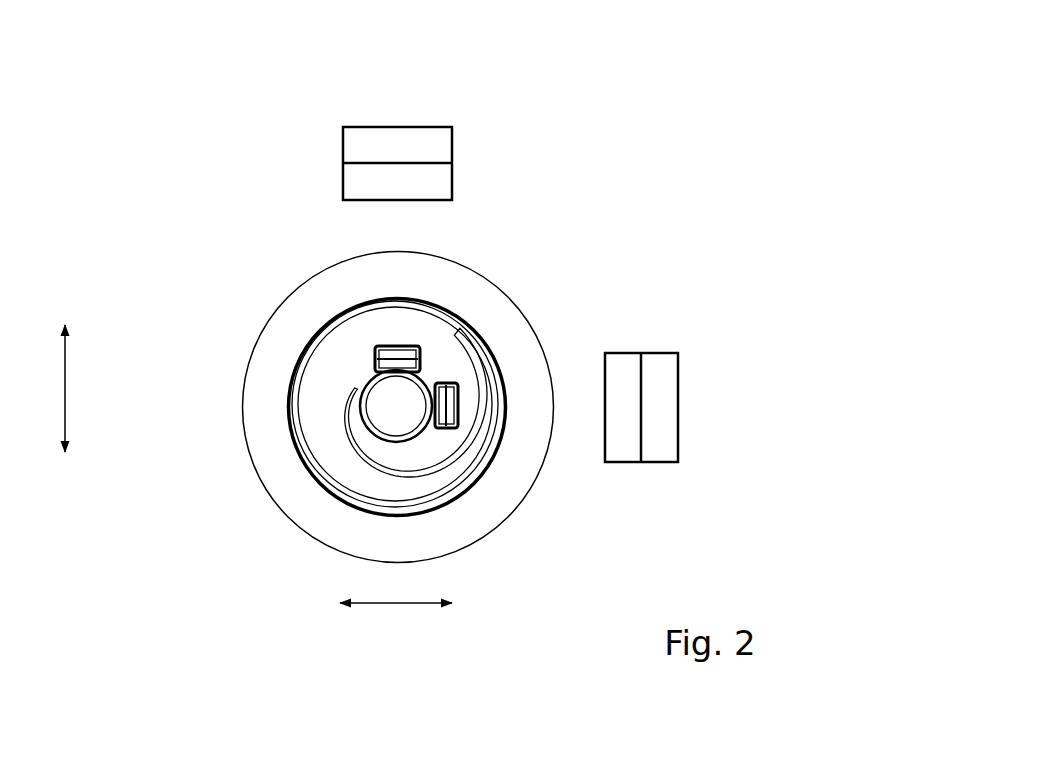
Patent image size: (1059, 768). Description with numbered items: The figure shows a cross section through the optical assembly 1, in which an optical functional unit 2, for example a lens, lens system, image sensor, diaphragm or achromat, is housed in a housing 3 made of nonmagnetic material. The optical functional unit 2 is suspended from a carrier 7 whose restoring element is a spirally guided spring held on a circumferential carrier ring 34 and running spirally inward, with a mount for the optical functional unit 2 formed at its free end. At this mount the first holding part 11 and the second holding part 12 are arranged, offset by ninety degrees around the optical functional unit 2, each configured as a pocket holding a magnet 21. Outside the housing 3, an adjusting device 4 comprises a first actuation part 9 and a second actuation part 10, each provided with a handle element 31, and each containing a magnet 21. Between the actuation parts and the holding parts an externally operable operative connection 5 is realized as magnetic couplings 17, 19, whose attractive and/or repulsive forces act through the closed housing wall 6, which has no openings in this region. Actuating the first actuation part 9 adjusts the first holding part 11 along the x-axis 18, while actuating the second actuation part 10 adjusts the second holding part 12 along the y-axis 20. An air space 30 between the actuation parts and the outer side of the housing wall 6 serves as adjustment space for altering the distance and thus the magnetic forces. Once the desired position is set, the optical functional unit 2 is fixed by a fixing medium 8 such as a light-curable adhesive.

The optical assembly 1 is at (728, 178).
The optical functional unit 2 is at (383, 406).
The housing 3 is at (480, 300).
The adjusting device 4 is at (747, 355).
The operative connection 5 is at (462, 228).
The housing wall 6 is at (272, 340).
The carrier 7 is at (440, 438).
The fixing medium 8 is at (433, 356).
The first actuation part 9 is at (672, 410).
The second actuation part 10 is at (438, 127).
The first holding part 11 is at (458, 410).
The second holding part 12 is at (393, 347).
The magnetic coupling 17 is at (768, 405).
The x-axis 18 is at (396, 589).
The magnetic coupling 19 is at (520, 134).
The y-axis 20 is at (48, 388).
The magnet 21 is at (368, 137).
The air space 30 is at (397, 233).
The handle element 31 is at (352, 128).
The carrier ring 34 is at (413, 502).